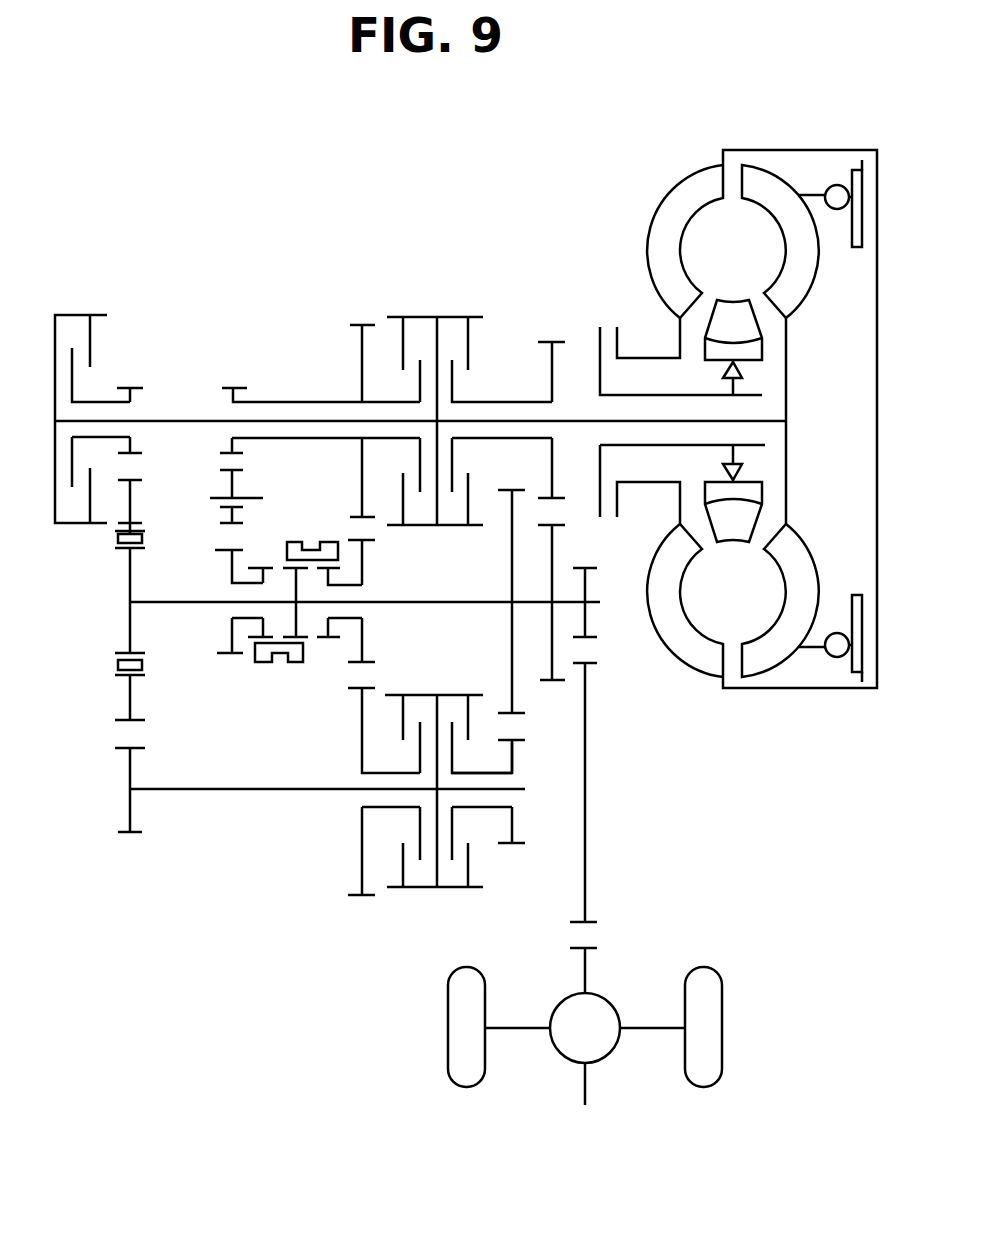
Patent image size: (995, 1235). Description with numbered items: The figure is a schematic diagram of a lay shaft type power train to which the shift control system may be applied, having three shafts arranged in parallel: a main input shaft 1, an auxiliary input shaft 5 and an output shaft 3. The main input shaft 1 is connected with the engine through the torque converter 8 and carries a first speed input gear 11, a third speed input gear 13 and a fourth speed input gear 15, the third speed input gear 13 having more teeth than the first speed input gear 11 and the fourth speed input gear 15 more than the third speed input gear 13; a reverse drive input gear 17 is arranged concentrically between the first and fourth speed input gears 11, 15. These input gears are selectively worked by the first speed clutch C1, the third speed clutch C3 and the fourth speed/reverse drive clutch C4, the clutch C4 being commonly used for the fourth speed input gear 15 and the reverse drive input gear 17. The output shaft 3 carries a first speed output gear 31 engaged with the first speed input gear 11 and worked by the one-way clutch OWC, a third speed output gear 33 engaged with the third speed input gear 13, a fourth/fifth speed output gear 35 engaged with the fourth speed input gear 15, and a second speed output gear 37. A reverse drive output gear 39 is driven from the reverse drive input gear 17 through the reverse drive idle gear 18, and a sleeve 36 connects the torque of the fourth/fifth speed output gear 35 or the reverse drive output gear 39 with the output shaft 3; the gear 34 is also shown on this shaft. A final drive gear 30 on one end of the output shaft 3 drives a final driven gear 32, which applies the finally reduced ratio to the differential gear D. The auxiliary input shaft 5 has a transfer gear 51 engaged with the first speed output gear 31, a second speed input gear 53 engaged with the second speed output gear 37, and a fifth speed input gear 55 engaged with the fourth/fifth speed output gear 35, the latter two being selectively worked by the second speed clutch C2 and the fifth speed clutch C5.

The main input shaft 1 is at (188, 420).
The first speed clutch C1 is at (72, 316).
The first speed input gear 11 is at (131, 388).
The first speed output gear 31 is at (140, 480).
The one-way clutch OWC is at (101, 625).
The reverse drive input gear 17 is at (236, 388).
The reverse drive idle gear 18 is at (242, 470).
The fourth speed input gear 15 is at (366, 325).
The fourth speed/reverse drive clutch C4 is at (412, 317).
The third speed clutch C3 is at (462, 317).
The third speed input gear 13 is at (553, 342).
The third speed output gear 33 is at (548, 683).
The second speed output gear 37 is at (518, 490).
The output shaft 3 is at (196, 602).
The gear 34 is at (294, 608).
The fourth/fifth speed output gear 35 is at (358, 540).
The reverse drive output gear 39 is at (234, 657).
The sleeve 36 is at (277, 655).
The auxiliary input shaft 5 is at (178, 789).
The transfer gear 51 is at (130, 834).
The fifth speed clutch C5 is at (413, 695).
The second speed clutch C2 is at (463, 695).
The second speed input gear 53 is at (510, 845).
The fifth speed input gear 55 is at (363, 897).
The final drive gear 30 is at (592, 663).
The final driven gear 32 is at (593, 937).
The differential gear D is at (573, 1045).
The torque converter 8 is at (653, 184).